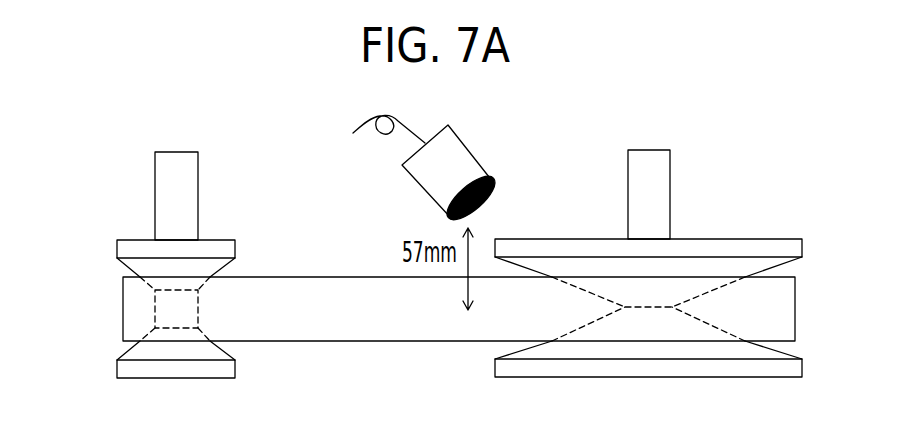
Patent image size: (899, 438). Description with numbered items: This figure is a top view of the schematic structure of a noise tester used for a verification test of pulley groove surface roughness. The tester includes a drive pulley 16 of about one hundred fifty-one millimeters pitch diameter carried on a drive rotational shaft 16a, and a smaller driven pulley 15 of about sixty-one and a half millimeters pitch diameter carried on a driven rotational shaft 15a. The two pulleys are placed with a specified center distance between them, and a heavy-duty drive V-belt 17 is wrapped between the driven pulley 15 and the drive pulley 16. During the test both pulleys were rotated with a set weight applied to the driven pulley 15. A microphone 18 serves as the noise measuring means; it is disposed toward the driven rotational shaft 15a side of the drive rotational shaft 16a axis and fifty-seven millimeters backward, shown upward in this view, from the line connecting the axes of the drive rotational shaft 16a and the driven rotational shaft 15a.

The driven pulley 15 is at (130, 240).
The driven rotational shaft 15a is at (198, 175).
The drive pulley 16 is at (764, 239).
The drive rotational shaft 16a is at (670, 162).
The heavy-duty drive V-belt 17 is at (318, 276).
The microphone 18 is at (483, 144).